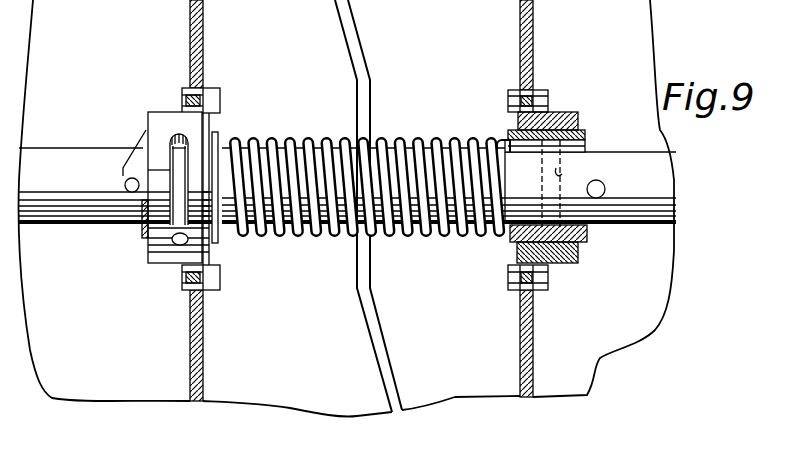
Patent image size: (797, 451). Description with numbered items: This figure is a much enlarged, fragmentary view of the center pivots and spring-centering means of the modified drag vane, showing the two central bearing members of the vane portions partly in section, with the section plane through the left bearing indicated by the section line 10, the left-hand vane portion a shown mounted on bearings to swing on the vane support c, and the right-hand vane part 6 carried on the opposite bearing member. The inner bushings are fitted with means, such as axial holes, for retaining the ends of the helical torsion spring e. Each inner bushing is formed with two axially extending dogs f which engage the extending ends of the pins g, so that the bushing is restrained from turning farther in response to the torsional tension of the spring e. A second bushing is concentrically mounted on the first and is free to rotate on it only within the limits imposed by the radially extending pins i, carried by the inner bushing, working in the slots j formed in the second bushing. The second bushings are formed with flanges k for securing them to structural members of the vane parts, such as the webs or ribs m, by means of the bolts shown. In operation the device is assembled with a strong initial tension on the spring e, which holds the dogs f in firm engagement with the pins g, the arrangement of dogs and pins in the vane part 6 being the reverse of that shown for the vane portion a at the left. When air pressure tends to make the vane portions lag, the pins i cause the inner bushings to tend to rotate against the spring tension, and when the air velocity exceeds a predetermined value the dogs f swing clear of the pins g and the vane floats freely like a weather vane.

The section line 10 is at (180, 330).
The vane portion a is at (286, 390).
The frame member 6 is at (477, 382).
The web or rib m is at (252, 356).
The flange k is at (208, 93).
The dog f is at (140, 158).
The slot j is at (170, 168).
The pin g is at (140, 194).
The radially extending pin i is at (173, 238).
The helical torsion spring e is at (397, 137).
The vane support c is at (603, 153).